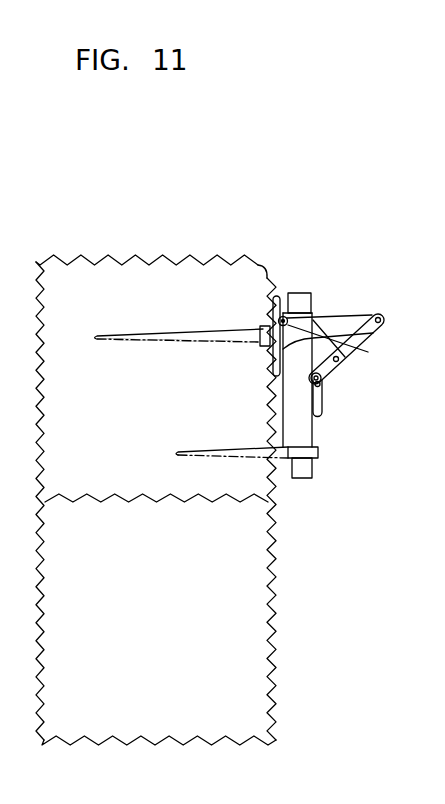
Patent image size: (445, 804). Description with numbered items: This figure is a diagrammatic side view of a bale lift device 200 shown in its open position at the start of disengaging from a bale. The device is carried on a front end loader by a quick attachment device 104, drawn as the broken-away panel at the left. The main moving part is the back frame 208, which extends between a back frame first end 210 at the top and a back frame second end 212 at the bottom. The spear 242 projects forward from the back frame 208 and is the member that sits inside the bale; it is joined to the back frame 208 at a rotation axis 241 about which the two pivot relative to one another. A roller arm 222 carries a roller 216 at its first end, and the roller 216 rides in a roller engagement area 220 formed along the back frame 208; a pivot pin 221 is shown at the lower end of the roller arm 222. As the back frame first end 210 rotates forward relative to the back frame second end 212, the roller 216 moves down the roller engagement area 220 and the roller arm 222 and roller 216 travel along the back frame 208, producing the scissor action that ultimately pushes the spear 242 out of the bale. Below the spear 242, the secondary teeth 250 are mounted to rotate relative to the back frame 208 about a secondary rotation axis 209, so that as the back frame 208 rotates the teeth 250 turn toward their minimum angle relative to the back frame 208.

The quick attachment device 104 is at (257, 210).
The bale lift device 200 is at (331, 246).
The back frame 208 is at (292, 392).
The secondary rotation axis 209 is at (317, 454).
The back frame first end 210 is at (296, 291).
The back frame second end 212 is at (308, 477).
The roller 216 is at (321, 385).
The roller engagement area 220 is at (323, 399).
The pivot pin 221 is at (321, 378).
The roller arm 222 is at (360, 350).
The rotation axis 241 is at (279, 319).
The spear 242 is at (165, 341).
The secondary teeth 250 is at (208, 456).